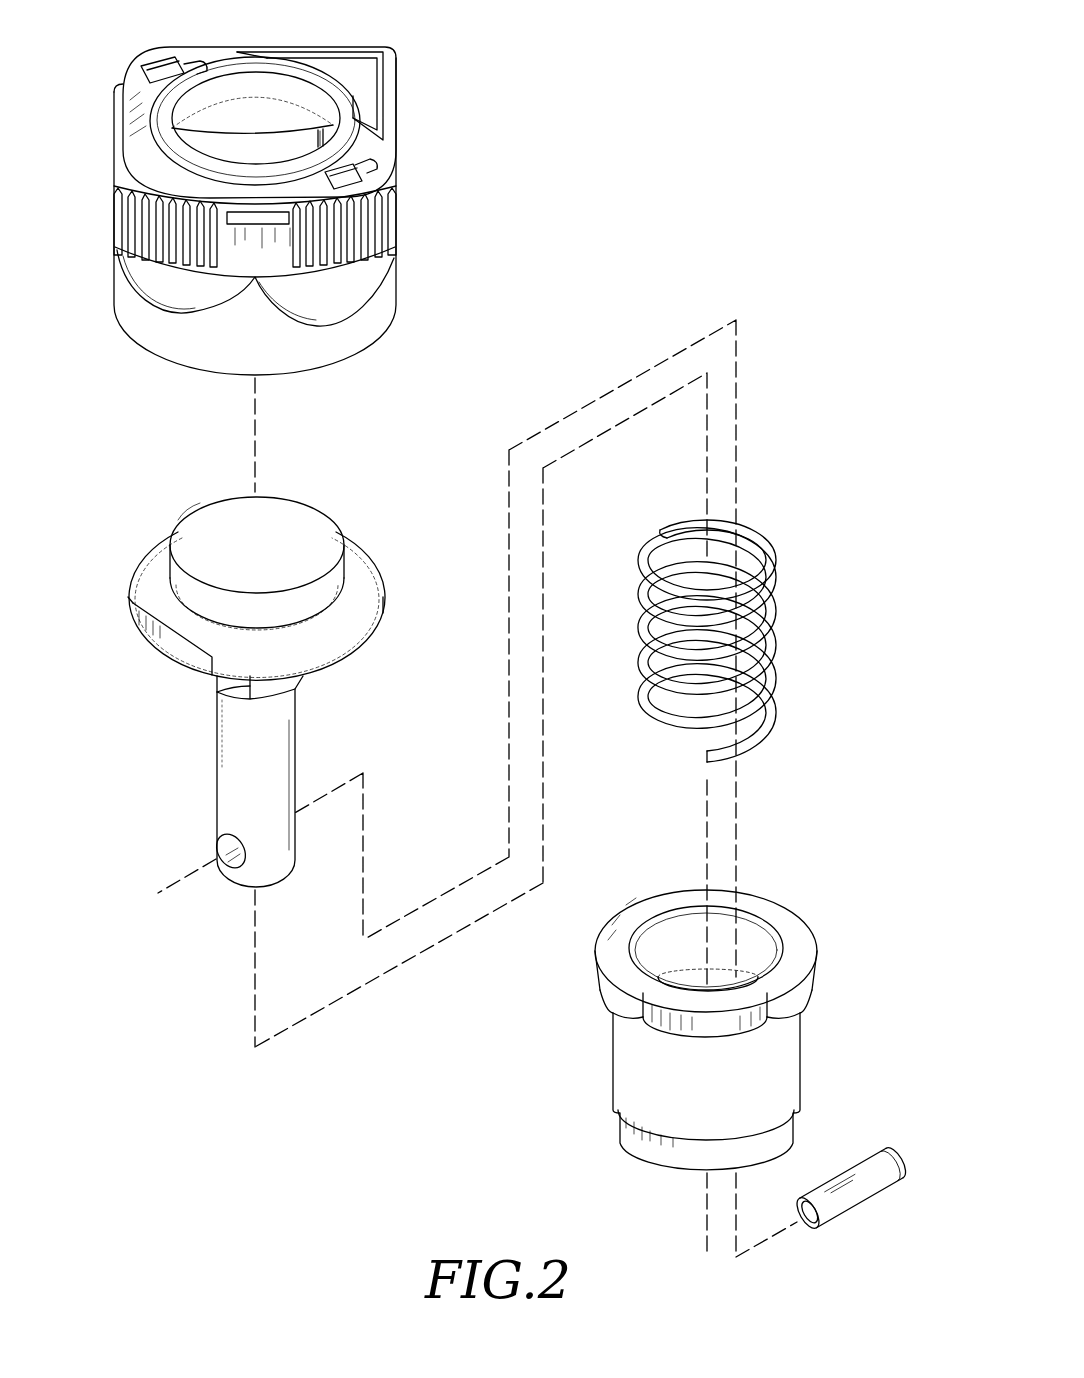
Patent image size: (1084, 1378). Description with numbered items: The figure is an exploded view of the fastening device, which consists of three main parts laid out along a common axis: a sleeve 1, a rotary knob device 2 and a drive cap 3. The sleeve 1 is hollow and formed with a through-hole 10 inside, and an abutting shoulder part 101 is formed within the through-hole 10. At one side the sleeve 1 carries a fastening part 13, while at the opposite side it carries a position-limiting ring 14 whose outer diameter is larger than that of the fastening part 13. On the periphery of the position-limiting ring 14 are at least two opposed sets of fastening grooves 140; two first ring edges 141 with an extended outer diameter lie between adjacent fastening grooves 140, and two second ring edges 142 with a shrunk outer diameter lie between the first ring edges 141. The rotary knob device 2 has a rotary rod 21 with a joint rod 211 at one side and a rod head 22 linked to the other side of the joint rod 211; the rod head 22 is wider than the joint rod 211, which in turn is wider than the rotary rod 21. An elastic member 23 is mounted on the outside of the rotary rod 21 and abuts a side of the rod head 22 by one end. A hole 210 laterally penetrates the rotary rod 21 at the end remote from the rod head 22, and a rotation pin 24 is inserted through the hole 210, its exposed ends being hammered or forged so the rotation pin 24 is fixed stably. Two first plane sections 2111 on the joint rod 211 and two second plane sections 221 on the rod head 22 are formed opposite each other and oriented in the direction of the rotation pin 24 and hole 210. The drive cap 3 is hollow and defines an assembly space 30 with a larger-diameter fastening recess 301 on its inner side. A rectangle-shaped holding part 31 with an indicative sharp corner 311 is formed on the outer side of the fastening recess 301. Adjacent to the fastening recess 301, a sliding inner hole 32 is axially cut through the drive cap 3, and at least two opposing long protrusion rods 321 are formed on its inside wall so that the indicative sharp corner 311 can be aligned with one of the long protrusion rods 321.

The sleeve 1 is at (820, 1059).
The through-hole 10 is at (752, 938).
The abutting shoulder part 101 is at (702, 985).
The fastening part 13 is at (667, 1150).
The position-limiting ring 14 is at (580, 993).
The fastening grooves 140 is at (630, 1006).
The first ring edges 141 is at (606, 955).
The second ring edges 142 is at (690, 1016).
The rotary knob device 2 is at (370, 516).
The rotary rod 21 is at (228, 786).
The hole 210 is at (212, 842).
The joint rod 211 is at (282, 681).
The first plane sections 2111 is at (240, 683).
The rod head 22 is at (150, 576).
The second plane sections 221 is at (177, 643).
The elastic member 23 is at (768, 622).
The rotation pin 24 is at (855, 1197).
The drive cap 3 is at (412, 291).
The assembly space 30 is at (238, 86).
The fastening recess 301 is at (208, 114).
The holding part 31 is at (375, 216).
The indicative sharp corner 311 is at (372, 70).
The sliding inner hole 32 is at (490, 143).
The long protrusion rods 321 is at (330, 136).